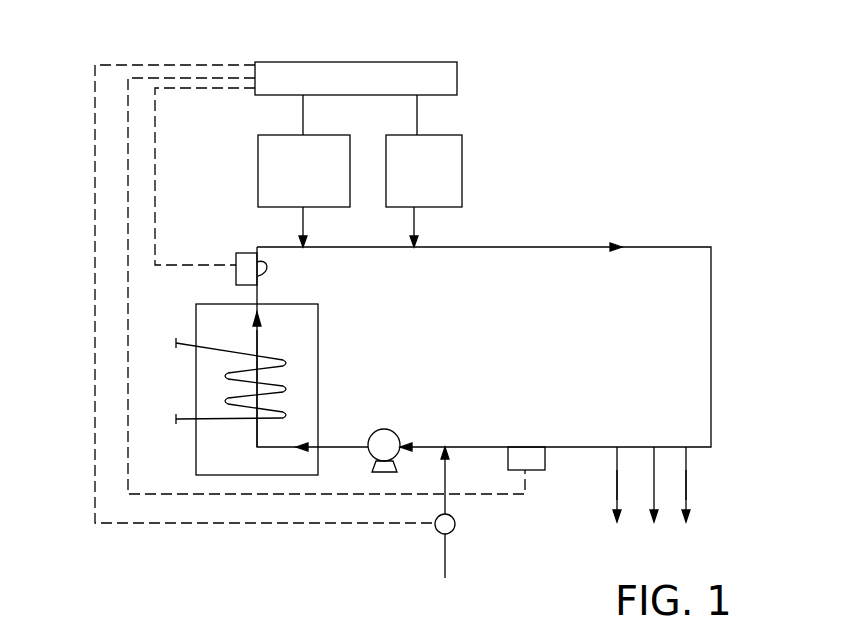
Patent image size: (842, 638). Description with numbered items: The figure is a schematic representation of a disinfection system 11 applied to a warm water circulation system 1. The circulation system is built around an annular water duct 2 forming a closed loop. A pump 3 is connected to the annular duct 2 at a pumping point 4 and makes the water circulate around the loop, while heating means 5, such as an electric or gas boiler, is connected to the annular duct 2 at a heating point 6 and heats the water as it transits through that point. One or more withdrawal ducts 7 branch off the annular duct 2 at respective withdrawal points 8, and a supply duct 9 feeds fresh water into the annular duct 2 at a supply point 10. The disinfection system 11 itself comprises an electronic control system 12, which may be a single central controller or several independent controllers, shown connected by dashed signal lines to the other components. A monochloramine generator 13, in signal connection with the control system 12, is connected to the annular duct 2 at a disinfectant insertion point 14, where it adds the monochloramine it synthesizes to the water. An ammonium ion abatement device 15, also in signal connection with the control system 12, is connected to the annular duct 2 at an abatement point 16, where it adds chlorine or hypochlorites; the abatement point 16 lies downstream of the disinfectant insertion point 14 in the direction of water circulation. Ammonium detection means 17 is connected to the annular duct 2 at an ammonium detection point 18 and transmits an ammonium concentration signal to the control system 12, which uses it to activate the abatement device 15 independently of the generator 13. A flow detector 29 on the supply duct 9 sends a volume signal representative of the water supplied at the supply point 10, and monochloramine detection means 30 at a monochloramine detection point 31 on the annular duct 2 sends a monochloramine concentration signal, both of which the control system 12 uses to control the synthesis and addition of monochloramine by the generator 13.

The warm water circulation system 1 is at (718, 243).
The annular water duct 2 is at (518, 247).
The pump 3 is at (395, 432).
The pumping point 4 is at (359, 440).
The heating means 5 is at (280, 385).
The heating point 6 is at (265, 352).
The withdrawal ducts 7 is at (616, 477).
The withdrawal point 8 is at (621, 441).
The supply duct 9 is at (445, 558).
The supply point 10 is at (455, 437).
The disinfection system 11 is at (487, 118).
The electronic control system 12 is at (360, 72).
The monochloramine generator 13 is at (272, 160).
The disinfectant insertion point 14 is at (303, 249).
The ammonium ion abatement device 15 is at (450, 168).
The abatement point 16 is at (414, 249).
The ammonium detection means 17 is at (240, 270).
The ammonium detection point 18 is at (258, 276).
The flow detector 29 is at (438, 531).
The monochloramine detection means 30 is at (537, 465).
The monochloramine detection point 31 is at (520, 447).